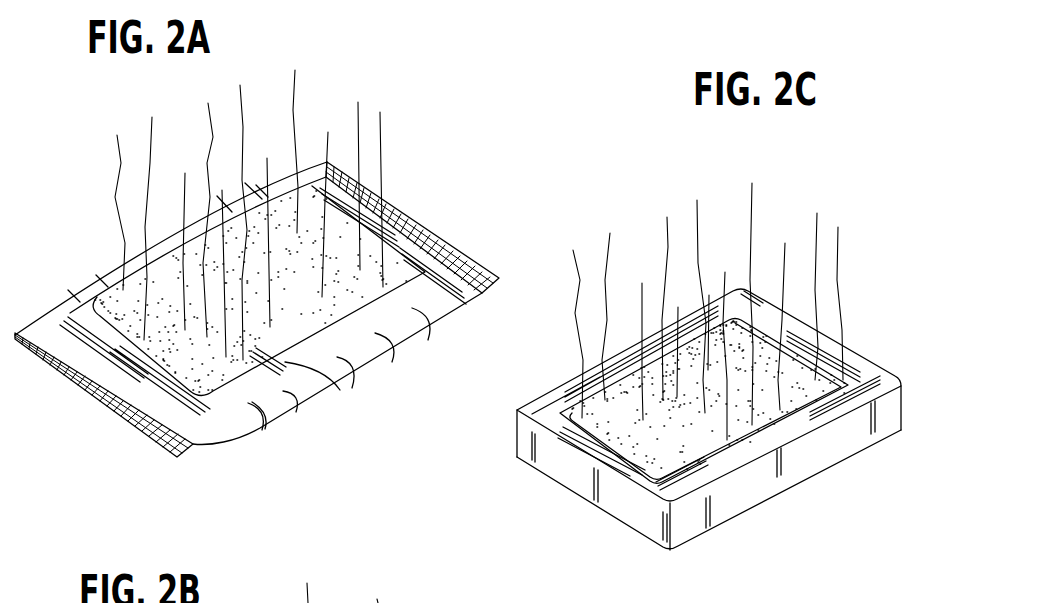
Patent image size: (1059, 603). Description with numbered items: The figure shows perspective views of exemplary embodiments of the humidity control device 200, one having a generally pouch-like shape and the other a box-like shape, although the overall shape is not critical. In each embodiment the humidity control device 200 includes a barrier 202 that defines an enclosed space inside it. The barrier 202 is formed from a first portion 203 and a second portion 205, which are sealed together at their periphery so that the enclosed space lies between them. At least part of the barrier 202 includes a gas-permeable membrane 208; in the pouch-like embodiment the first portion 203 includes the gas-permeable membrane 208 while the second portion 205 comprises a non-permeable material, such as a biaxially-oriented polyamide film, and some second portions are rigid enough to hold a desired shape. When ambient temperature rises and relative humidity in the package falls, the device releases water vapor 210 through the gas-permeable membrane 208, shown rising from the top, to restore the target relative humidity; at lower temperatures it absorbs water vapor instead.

In FIG. 2A, the humidity control device 200 is at (427, 97).
In FIG. 2C, the humidity control device 200 is at (803, 183).
In FIG. 2A, the barrier 202 is at (437, 290).
In FIG. 2C, the barrier 202 is at (807, 428).
In FIG. 2A, the first portion 203 is at (340, 390).
In FIG. 2C, the first portion 203 is at (717, 475).
In FIG. 2A, the second portion 205 is at (250, 466).
In FIG. 2C, the second portion 205 is at (612, 543).
In FIG. 2A, the gas-permeable membrane 208 is at (400, 352).
In FIG. 2C, the gas-permeable membrane 208 is at (795, 350).
In FIG. 2A, the water vapor 210 is at (113, 144).
In FIG. 2C, the water vapor 210 is at (665, 233).